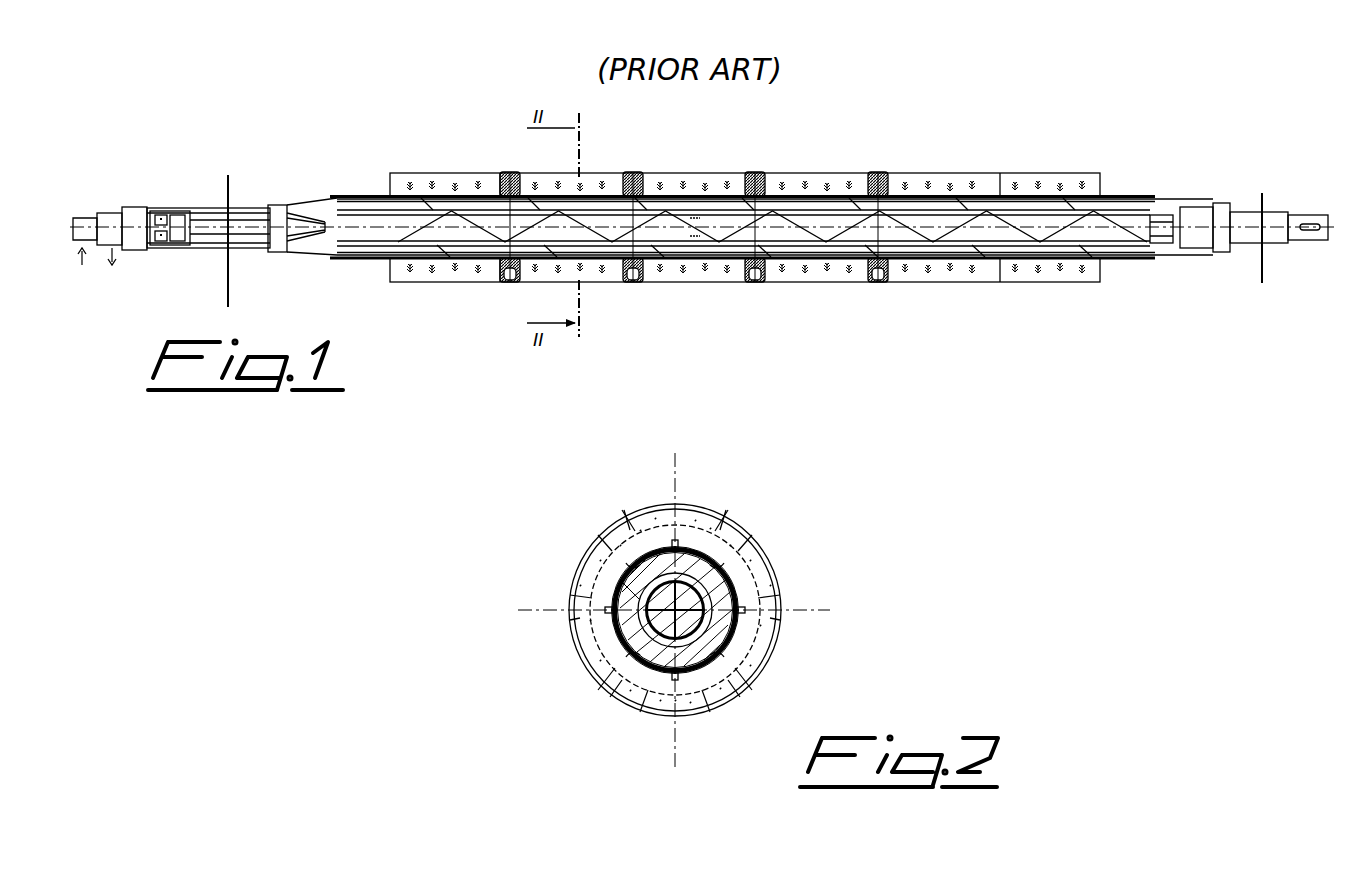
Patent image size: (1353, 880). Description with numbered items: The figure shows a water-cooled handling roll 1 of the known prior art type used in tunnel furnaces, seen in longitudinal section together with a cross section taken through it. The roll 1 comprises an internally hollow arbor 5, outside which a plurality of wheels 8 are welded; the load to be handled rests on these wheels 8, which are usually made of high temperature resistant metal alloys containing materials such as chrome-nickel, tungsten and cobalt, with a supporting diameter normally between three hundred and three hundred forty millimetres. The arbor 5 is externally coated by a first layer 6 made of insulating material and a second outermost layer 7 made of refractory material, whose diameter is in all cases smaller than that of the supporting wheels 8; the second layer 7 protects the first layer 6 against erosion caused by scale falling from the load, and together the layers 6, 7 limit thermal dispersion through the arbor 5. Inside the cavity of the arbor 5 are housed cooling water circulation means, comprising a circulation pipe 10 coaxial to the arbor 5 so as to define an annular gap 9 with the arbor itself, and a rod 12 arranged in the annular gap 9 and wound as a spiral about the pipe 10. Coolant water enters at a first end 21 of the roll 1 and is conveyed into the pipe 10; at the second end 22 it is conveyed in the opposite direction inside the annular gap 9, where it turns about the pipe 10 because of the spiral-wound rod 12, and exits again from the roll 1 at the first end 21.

In FIG. 1, the roll 1 is at (1112, 146).
In FIG. 2, the roll 1 is at (602, 513).
In FIG. 1, the arbor 5 is at (700, 203).
In FIG. 2, the arbor 5 is at (697, 663).
In FIG. 2, the first layer 6 is at (717, 560).
In FIG. 2, the second layer 7 is at (745, 572).
In FIG. 1, the wheels 8 is at (508, 173).
In FIG. 2, the annular gap 9 is at (735, 662).
In FIG. 1, the circulation pipe 10 is at (975, 226).
In FIG. 2, the circulation pipe 10 is at (645, 591).
In FIG. 1, the rod 12 is at (775, 216).
In FIG. 1, the first end 21 is at (117, 199).
In FIG. 1, the second end 22 is at (1194, 270).